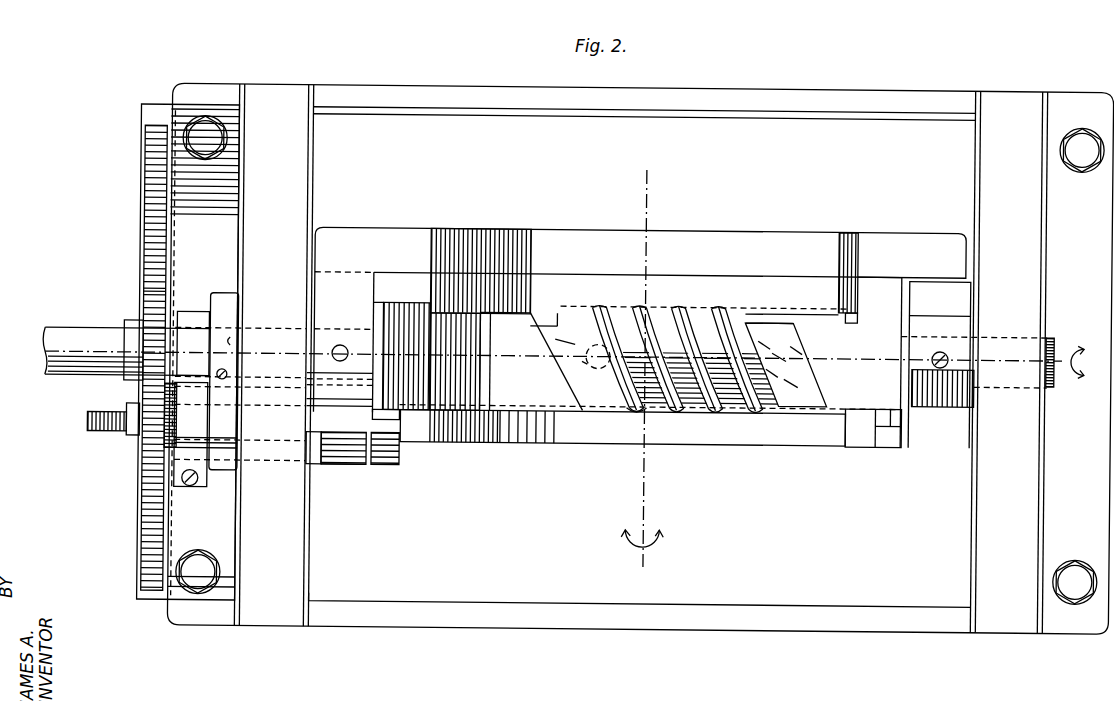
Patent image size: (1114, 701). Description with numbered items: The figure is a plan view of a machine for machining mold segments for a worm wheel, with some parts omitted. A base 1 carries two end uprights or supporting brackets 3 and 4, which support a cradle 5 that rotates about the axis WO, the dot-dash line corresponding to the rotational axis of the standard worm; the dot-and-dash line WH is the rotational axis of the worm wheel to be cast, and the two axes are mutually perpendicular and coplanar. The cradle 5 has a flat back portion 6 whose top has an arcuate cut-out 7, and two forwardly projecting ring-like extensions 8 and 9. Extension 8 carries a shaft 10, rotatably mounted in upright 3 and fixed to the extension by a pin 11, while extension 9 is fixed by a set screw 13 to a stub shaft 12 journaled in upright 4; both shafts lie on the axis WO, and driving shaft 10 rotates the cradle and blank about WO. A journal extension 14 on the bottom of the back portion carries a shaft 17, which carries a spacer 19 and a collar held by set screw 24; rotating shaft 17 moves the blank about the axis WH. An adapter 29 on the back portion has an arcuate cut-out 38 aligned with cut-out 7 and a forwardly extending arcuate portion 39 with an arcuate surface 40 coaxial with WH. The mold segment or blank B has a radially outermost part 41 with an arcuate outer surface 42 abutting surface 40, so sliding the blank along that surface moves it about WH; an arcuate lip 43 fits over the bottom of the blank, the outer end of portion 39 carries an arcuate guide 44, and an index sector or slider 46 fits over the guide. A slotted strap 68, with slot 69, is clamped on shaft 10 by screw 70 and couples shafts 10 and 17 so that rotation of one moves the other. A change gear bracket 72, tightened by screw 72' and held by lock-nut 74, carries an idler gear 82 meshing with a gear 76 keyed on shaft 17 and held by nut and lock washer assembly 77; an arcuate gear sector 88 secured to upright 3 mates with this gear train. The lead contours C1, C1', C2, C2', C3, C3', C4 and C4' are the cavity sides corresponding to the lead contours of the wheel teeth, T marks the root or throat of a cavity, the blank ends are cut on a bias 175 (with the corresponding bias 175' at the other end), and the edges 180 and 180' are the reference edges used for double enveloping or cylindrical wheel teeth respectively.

The base 1 is at (1060, 630).
The end upright 3 is at (278, 211).
The end upright 4 is at (1015, 216).
The cradle 5 is at (857, 228).
The flat back portion 6 is at (400, 240).
The arcuate cut-out 7 is at (530, 232).
The ring-like extension 8 is at (333, 312).
The ring-like extension 9 is at (946, 310).
The shaft 10 is at (268, 332).
The pin 11 is at (340, 348).
The stub shaft 12 is at (1004, 384).
The set screw 13 is at (942, 365).
The journal extension 14 is at (335, 469).
The shaft 17 is at (353, 470).
The spacer 19 is at (310, 465).
The set screw 24 is at (400, 455).
The adapter 29 is at (864, 316).
The arcuate cut-out 38 is at (575, 297).
The arcuately-formed portion 39 is at (523, 409).
The arcuately-formed surface 40 is at (500, 392).
The radially outermost part of blank 41 is at (555, 340).
The arcuate outer surface 42 is at (800, 340).
The arcuately-shaped lip 43 is at (847, 312).
The arcuately-shaped guide 44 is at (891, 426).
The index sector 46 is at (798, 444).
The strap 68 is at (218, 297).
The slot 69 is at (230, 341).
The screw 70 is at (238, 377).
The change gear bracket 72 is at (193, 323).
The screw 72' is at (205, 447).
The lock-nut 74 is at (173, 439).
The gear 76 is at (140, 452).
The nut and lock washer assembly 77 is at (133, 411).
The gear 82 is at (147, 297).
The arcuate gear sector 88 is at (146, 511).
The bias 175 is at (555, 362).
The worm end block 175' is at (805, 357).
The edge 180 is at (561, 353).
The edge 180' is at (621, 442).
The mold segment B is at (680, 413).
The throat T is at (582, 362).
The lead contour C1 is at (599, 330).
The lead contour C1' is at (619, 328).
The lead contour C2 is at (658, 330).
The lead contour C2' is at (681, 330).
The lead contour C3 is at (696, 345).
The lead contour C3' is at (719, 344).
The lead contour C4 is at (749, 346).
The lead contour C4' is at (773, 345).
The worm wheel axis WH is at (645, 190).
The worm axis WO is at (1059, 354).